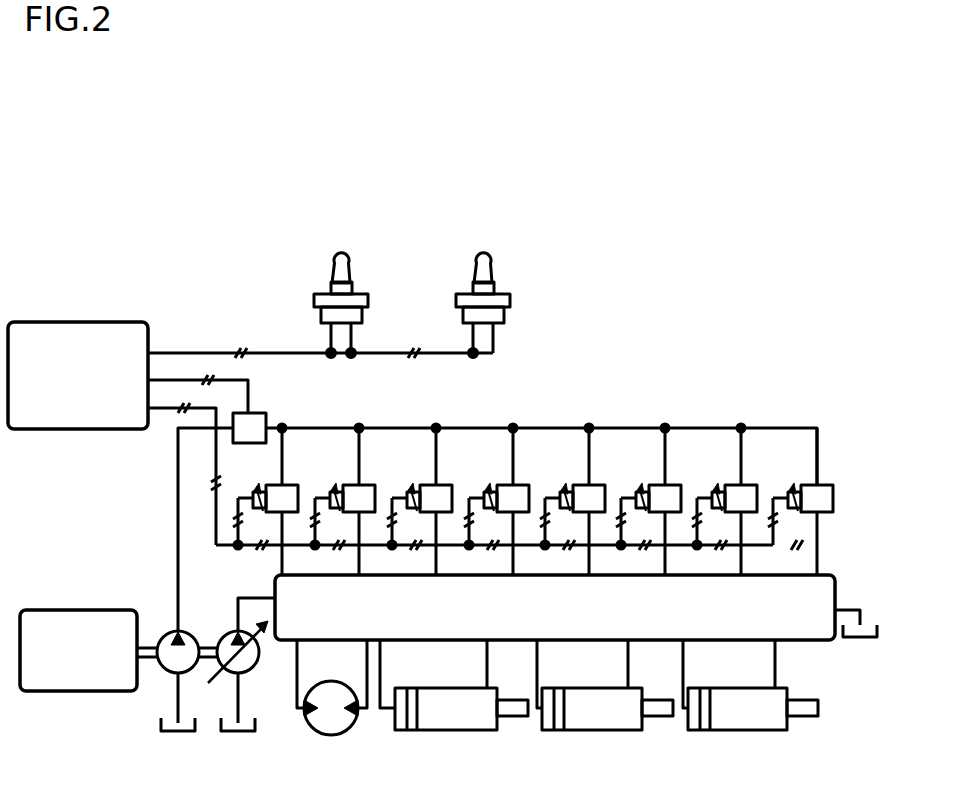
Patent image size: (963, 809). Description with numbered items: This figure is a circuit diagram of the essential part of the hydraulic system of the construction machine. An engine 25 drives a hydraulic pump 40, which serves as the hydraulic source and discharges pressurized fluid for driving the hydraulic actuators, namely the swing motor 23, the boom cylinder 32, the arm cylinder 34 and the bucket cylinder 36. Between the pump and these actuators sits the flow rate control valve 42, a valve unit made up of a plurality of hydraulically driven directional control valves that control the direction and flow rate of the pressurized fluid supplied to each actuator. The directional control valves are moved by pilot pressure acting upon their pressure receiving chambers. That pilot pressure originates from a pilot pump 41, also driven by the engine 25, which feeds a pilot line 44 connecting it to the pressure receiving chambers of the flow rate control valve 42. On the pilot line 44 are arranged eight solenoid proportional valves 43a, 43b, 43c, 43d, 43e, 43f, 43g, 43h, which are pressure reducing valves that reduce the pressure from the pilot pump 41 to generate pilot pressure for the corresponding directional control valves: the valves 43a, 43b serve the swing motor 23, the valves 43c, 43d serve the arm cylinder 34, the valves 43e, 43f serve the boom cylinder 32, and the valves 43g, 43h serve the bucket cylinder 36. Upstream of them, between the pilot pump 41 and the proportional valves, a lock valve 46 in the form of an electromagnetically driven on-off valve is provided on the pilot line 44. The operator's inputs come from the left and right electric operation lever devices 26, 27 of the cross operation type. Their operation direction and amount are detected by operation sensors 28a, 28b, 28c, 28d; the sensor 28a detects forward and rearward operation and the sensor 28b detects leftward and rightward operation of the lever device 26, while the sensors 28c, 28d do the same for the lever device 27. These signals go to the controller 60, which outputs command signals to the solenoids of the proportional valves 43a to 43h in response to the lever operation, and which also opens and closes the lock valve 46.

The controller 60 is at (79, 321).
The operation lever device 26 is at (384, 287).
The operation lever device 27 is at (526, 287).
The operation sensor 28a is at (384, 305).
The operation sensor 28b is at (362, 313).
The operation sensor 28c is at (526, 305).
The operation sensor 28d is at (504, 313).
The lock valve 46 is at (260, 413).
The pilot line 44 is at (178, 498).
The solenoid proportional valve 43a is at (292, 486).
The solenoid proportional valve 43b is at (369, 486).
The solenoid proportional valve 43c is at (446, 486).
The solenoid proportional valve 43d is at (523, 486).
The solenoid proportional valve 43e is at (599, 486).
The solenoid proportional valve 43f is at (675, 486).
The solenoid proportional valve 43g is at (751, 486).
The solenoid proportional valve 43h is at (827, 486).
The flow rate control valve 42 is at (838, 580).
The engine 25 is at (79, 609).
The pilot pump 41 is at (158, 633).
The hydraulic pump 40 is at (213, 632).
The swing motor 23 is at (331, 737).
The arm cylinder 34 is at (446, 733).
The boom cylinder 32 is at (592, 733).
The bucket cylinder 36 is at (737, 733).